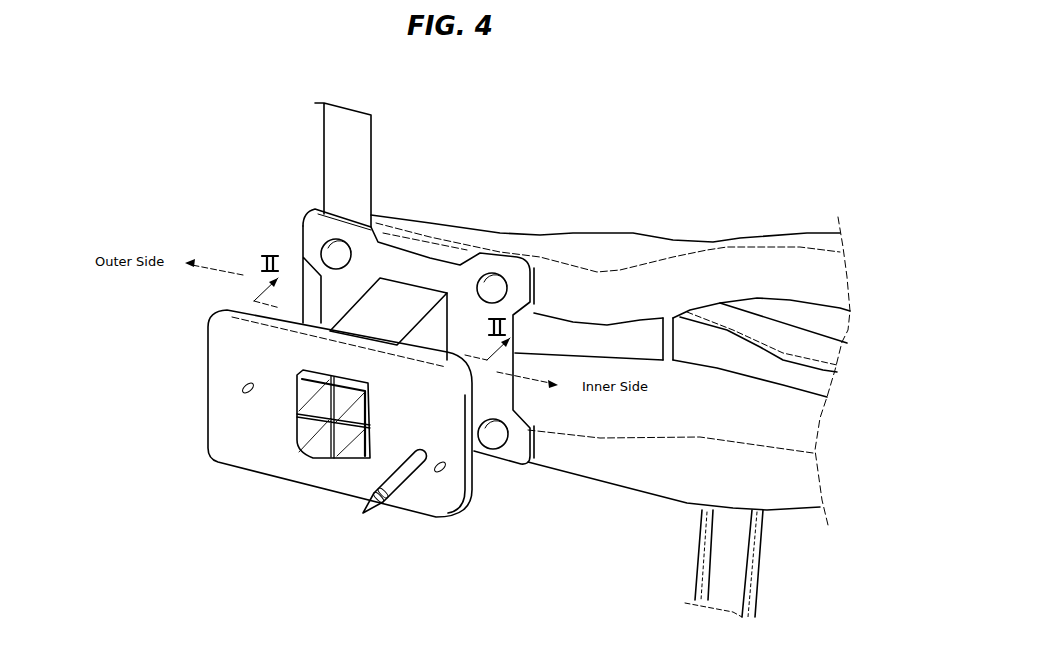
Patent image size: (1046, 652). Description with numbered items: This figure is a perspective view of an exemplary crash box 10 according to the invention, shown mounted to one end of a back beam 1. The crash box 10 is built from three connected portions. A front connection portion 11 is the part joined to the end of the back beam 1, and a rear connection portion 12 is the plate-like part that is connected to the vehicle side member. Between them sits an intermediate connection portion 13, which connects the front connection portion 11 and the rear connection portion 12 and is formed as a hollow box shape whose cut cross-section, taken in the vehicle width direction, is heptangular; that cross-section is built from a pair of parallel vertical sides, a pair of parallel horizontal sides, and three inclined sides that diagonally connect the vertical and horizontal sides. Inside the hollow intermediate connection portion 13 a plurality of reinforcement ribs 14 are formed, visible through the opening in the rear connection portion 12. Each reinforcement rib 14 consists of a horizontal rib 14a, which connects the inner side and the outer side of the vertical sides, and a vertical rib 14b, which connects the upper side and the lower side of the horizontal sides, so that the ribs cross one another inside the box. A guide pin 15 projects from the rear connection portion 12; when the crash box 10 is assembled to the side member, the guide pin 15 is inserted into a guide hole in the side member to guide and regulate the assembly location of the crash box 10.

The back beam 1 is at (713, 268).
The crash box 10 is at (200, 357).
The front connection portion 11 is at (442, 277).
The rear connection portion 12 is at (327, 480).
The intermediate connection portion 13 is at (400, 290).
The reinforcement rib 14 is at (233, 436).
The horizontal rib 14a is at (293, 437).
The vertical rib 14b is at (295, 388).
The guide pin 15 is at (407, 470).